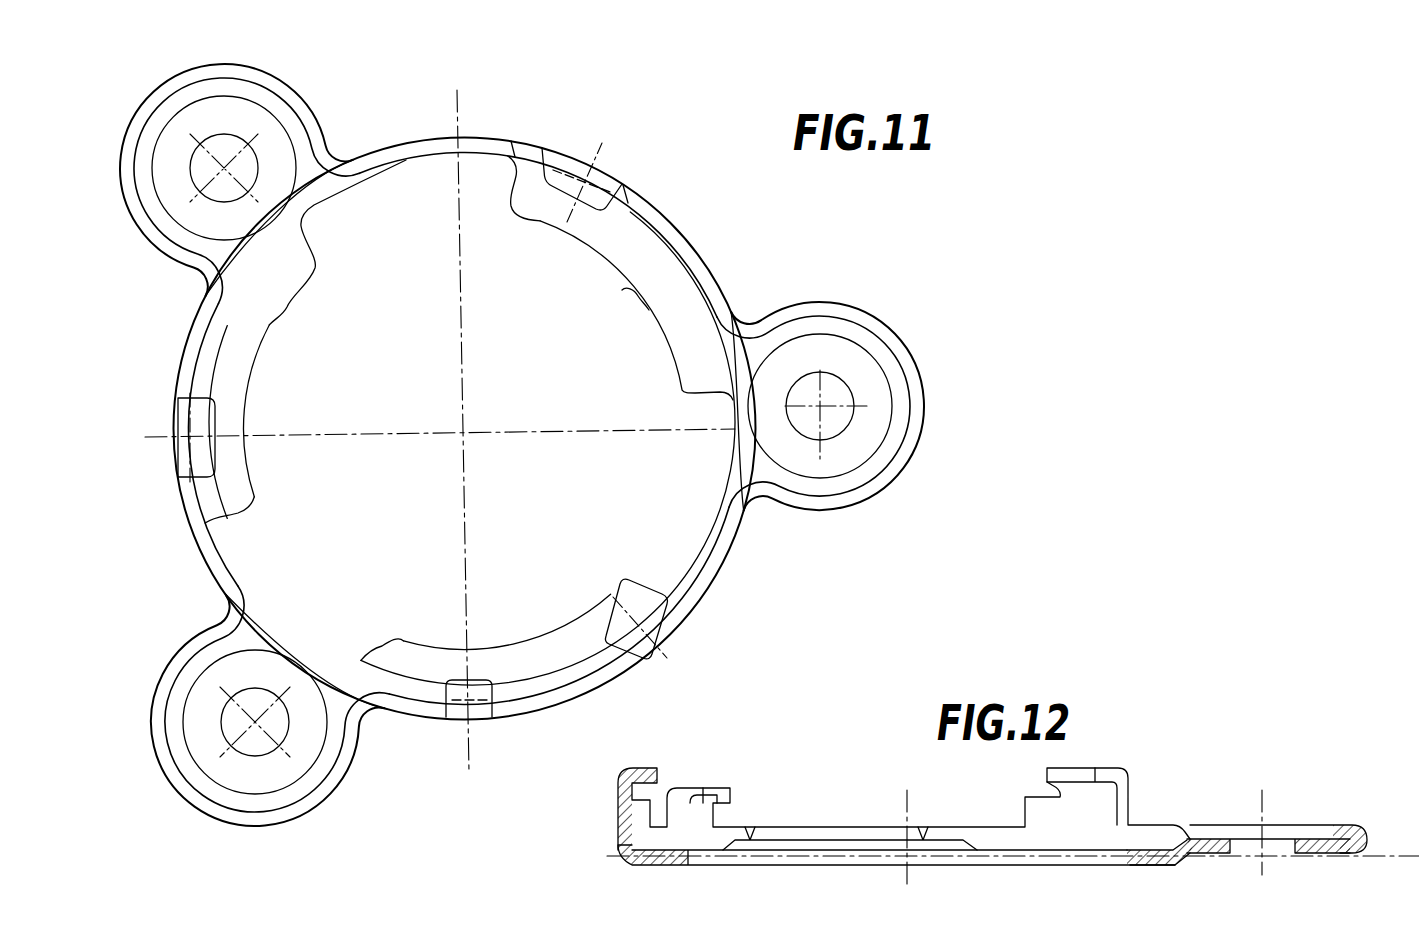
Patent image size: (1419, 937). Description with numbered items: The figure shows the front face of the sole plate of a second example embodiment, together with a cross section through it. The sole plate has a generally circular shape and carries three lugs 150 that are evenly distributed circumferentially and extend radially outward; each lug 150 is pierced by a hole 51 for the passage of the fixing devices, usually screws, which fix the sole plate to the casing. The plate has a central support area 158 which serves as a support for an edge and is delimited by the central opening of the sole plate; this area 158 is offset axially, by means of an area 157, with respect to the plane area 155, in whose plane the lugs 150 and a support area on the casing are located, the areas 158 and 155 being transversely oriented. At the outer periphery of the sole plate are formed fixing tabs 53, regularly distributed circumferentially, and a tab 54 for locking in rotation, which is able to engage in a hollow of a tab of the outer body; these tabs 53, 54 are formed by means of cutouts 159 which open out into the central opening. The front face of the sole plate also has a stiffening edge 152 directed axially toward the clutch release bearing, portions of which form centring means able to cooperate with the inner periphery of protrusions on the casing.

In FIG. 11, the lug 150 is at (300, 83).
In FIG. 11, the stiffening edge 152 is at (660, 208).
In FIG. 11, the plane area 155 is at (885, 457).
In FIG. 12, the plane area 155 is at (1333, 827).
In FIG. 11, the offset area 157 is at (387, 690).
In FIG. 12, the offset area 157 is at (1177, 837).
In FIG. 11, the central support area 158 is at (255, 328).
In FIG. 11, the cutout 159 is at (642, 303).
In FIG. 11, the hole 51 is at (258, 752).
In FIG. 12, the hole 51 is at (1248, 840).
In FIG. 11, the fixing tab 53 is at (670, 598).
In FIG. 11, the locking tab 54 is at (483, 717).